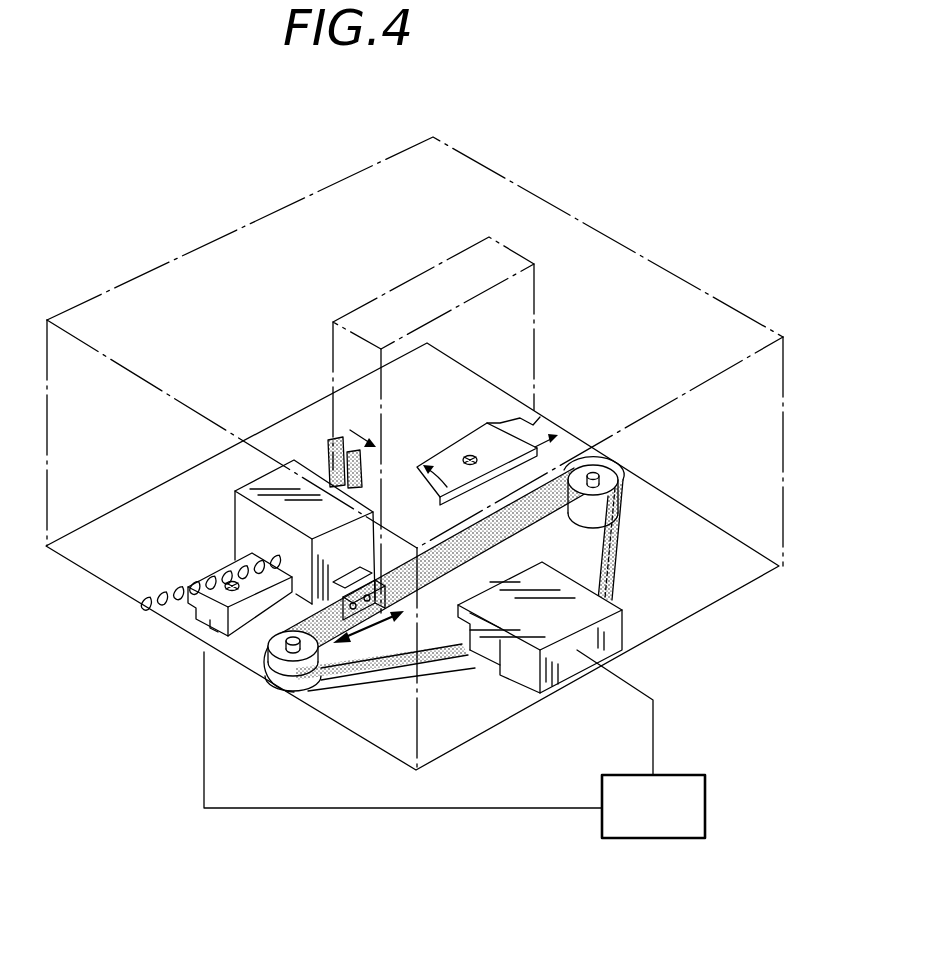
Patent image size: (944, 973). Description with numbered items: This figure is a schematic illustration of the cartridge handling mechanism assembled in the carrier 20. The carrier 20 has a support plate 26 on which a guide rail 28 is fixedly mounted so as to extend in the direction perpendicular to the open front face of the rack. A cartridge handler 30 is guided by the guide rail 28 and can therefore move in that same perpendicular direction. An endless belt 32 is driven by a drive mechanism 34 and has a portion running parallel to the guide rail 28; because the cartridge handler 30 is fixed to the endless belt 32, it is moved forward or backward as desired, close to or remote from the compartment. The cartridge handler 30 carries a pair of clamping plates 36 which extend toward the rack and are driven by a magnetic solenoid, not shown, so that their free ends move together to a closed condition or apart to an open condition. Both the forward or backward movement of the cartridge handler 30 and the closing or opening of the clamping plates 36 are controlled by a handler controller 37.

The carrier 20 is at (165, 637).
The support plate 26 is at (725, 601).
The guide rail 28 is at (180, 573).
The cartridge handler 30 is at (252, 482).
The endless belt 32 is at (352, 680).
The drive mechanism 34 is at (622, 627).
The clamping plates 36 is at (340, 437).
The handler controller 37 is at (705, 790).